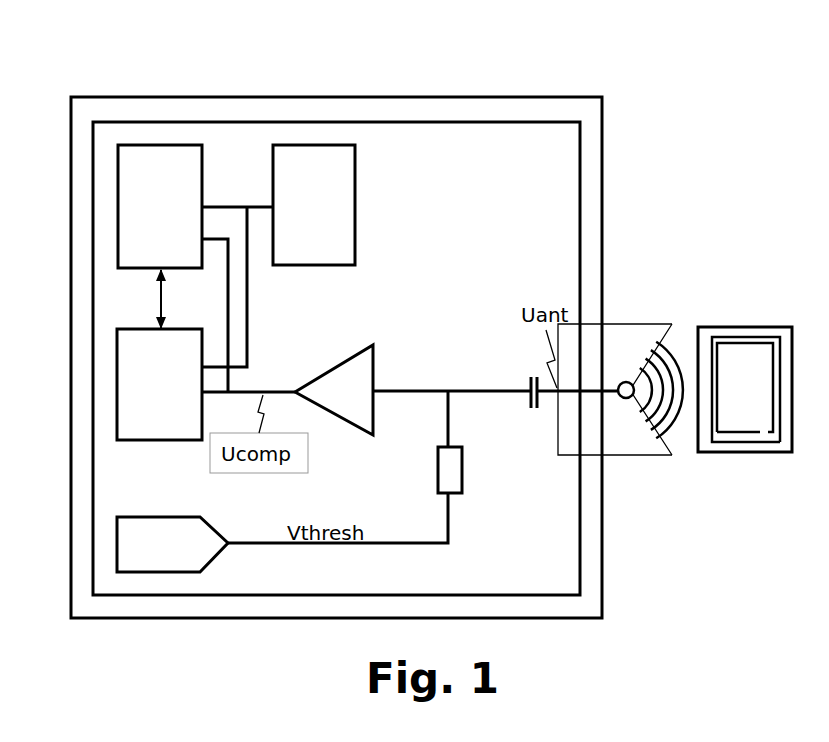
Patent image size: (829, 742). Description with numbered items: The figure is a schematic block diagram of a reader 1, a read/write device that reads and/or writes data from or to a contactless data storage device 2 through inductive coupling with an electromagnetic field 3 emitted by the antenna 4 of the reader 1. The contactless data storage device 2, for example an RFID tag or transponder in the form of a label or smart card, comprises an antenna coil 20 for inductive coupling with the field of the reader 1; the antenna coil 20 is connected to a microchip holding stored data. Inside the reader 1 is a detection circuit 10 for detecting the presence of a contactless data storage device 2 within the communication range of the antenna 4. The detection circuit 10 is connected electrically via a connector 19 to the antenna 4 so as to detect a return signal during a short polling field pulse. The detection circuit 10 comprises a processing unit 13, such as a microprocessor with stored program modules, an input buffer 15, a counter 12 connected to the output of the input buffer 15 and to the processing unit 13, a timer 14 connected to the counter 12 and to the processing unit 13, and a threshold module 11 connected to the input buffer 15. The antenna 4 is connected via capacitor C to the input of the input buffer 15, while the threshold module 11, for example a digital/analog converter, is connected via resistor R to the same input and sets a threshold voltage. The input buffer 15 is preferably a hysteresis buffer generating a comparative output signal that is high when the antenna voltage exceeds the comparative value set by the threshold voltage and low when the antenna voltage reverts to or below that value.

The reader 1 is at (96, 635).
The contactless data storage device 2 is at (777, 462).
The electromagnetic field 3 is at (662, 322).
The antenna 4 is at (627, 400).
The detection circuit 10 is at (568, 152).
The threshold module 11 is at (127, 552).
The counter 12 is at (127, 422).
The processing unit 13 is at (128, 247).
The timer 14 is at (303, 153).
The input buffer 15 is at (362, 372).
The connector 19 is at (590, 388).
The antenna coil 20 is at (760, 343).
The resistor R is at (455, 472).
The capacitor C is at (538, 421).